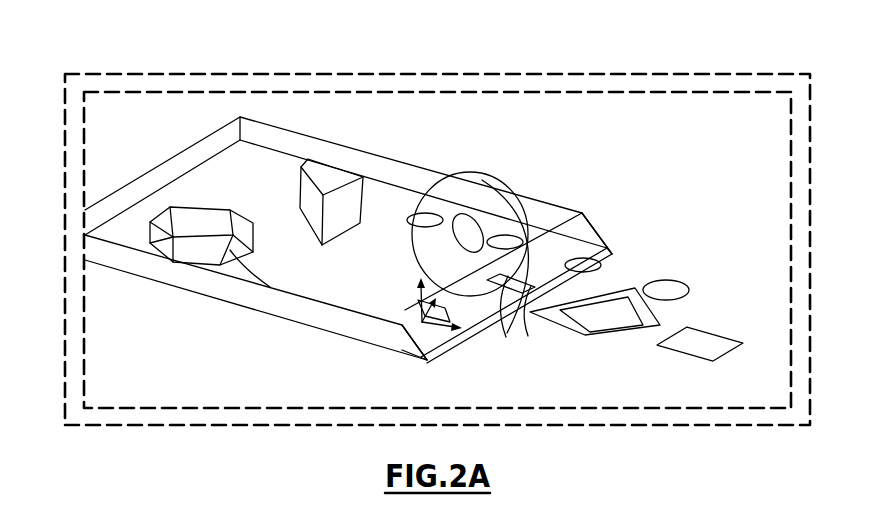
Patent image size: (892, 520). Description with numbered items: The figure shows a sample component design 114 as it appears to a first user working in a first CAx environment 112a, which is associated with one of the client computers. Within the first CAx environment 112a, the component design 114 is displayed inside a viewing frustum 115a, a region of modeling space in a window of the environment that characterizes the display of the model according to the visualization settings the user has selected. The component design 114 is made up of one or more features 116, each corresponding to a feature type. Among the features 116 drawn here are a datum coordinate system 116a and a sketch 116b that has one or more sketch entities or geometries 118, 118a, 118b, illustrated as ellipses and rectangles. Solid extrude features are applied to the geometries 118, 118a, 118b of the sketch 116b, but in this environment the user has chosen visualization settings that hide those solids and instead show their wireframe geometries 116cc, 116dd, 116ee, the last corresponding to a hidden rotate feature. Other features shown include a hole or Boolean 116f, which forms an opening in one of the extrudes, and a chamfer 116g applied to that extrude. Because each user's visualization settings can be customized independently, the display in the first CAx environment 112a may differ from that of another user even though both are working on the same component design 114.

The first CAx environment 112a is at (123, 64).
The viewing frustum 115a is at (197, 82).
The component design 114 is at (170, 144).
The hole or Boolean 116f is at (197, 203).
The wireframe 116dd is at (349, 160).
The wireframe 116cc is at (409, 153).
The wireframe geometry 116ee is at (501, 170).
The sketch entity or geometry 118b is at (511, 236).
The feature 116 is at (652, 278).
The sketch 116b is at (703, 298).
The sketch entity or geometry 118 is at (625, 341).
The sketch entity or geometry 118a is at (250, 252).
The datum coordinate system 116a is at (412, 346).
The chamfer 116g is at (417, 343).